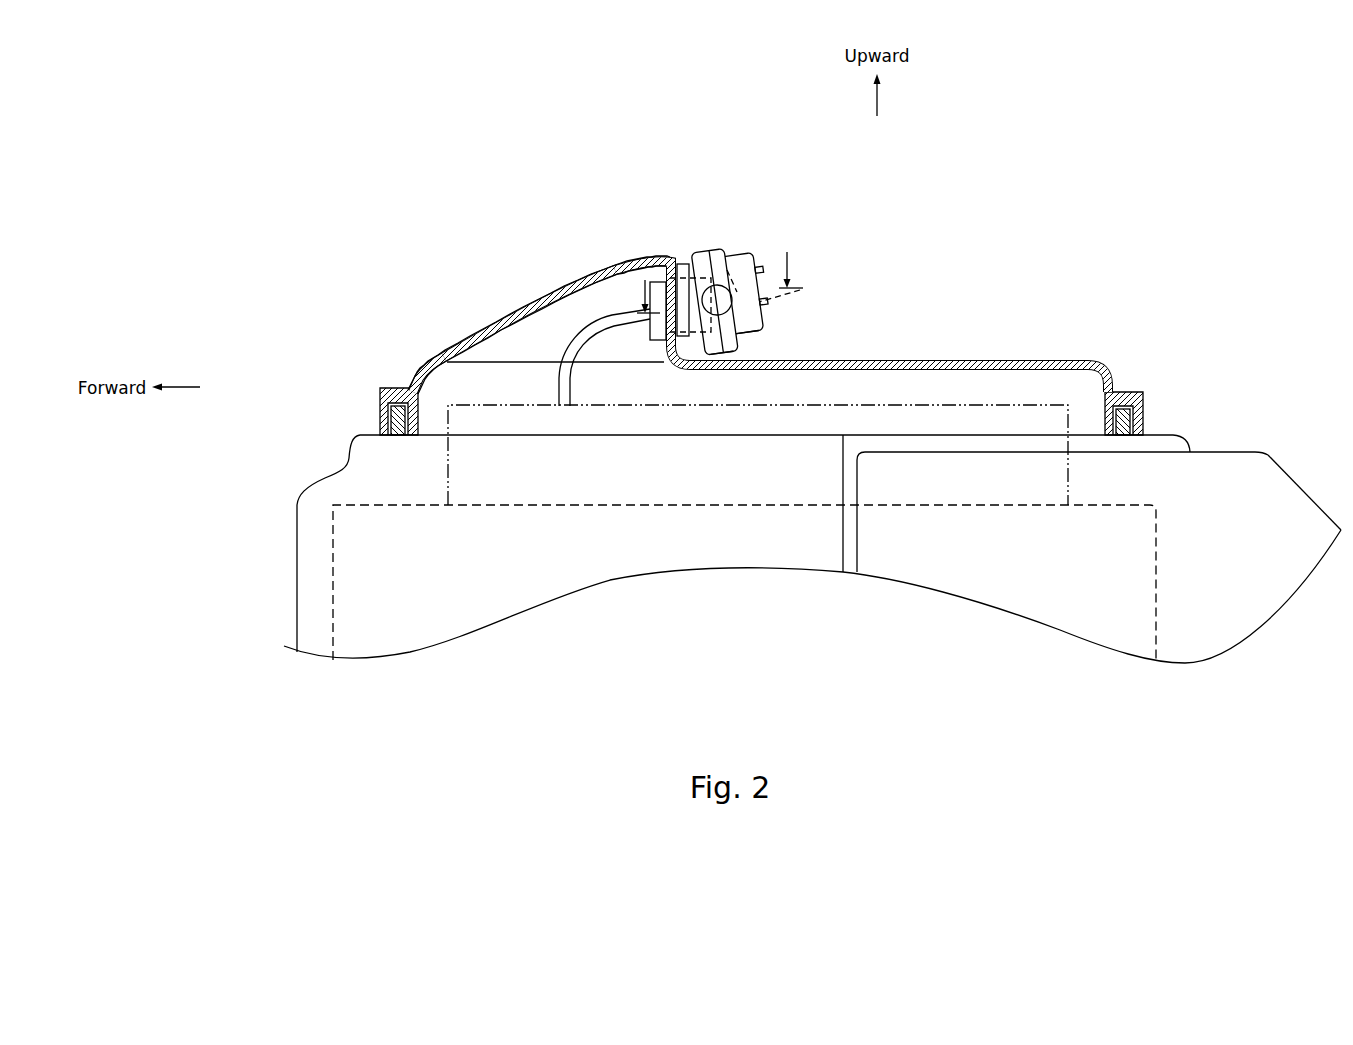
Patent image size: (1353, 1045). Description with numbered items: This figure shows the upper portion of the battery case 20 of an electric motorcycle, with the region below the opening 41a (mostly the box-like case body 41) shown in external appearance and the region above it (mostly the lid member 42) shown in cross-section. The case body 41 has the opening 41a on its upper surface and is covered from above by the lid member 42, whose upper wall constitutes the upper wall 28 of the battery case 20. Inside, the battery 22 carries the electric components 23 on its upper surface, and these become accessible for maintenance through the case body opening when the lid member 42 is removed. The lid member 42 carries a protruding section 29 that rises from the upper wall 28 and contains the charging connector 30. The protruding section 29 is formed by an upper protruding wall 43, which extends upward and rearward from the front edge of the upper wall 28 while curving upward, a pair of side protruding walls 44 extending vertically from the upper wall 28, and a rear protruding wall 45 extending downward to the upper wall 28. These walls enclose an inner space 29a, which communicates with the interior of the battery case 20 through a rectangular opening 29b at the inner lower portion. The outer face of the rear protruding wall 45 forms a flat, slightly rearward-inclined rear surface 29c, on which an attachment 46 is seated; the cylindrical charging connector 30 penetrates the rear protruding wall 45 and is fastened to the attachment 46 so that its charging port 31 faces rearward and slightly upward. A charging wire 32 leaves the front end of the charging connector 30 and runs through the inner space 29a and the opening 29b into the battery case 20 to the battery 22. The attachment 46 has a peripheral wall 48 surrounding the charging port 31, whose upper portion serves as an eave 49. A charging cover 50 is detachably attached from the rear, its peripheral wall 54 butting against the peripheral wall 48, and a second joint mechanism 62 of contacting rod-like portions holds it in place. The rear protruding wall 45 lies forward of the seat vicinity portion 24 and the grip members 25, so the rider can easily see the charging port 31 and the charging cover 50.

The battery case 20 is at (352, 428).
The battery 22 is at (333, 612).
The electric components 23 is at (447, 487).
The seat vicinity portion 24 is at (847, 532).
The grip members 25 is at (893, 557).
The upper wall 28 is at (995, 359).
The protruding section 29 is at (533, 286).
The inner space 29a is at (560, 295).
The opening 29b is at (500, 362).
The rear surface 29c is at (683, 257).
The charging connector 30 is at (652, 282).
The charging port 31 is at (714, 278).
The charging wire 32 is at (603, 323).
The case body 41 is at (328, 482).
The opening 41a is at (1045, 437).
The lid member 42 is at (430, 363).
The upper protruding wall 43 is at (507, 308).
The side protruding walls 44 is at (497, 338).
The rear protruding wall 45 is at (660, 360).
The attachment 46 is at (700, 353).
The peripheral wall 48 is at (717, 350).
The eave 49 is at (693, 255).
The charging cover 50 is at (757, 257).
The peripheral wall 54 is at (745, 332).
The second joint mechanism 62 is at (749, 302).